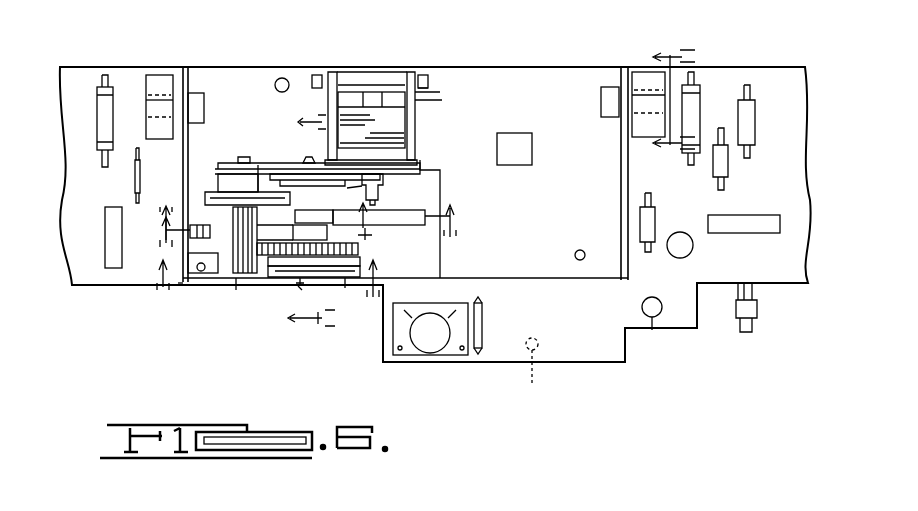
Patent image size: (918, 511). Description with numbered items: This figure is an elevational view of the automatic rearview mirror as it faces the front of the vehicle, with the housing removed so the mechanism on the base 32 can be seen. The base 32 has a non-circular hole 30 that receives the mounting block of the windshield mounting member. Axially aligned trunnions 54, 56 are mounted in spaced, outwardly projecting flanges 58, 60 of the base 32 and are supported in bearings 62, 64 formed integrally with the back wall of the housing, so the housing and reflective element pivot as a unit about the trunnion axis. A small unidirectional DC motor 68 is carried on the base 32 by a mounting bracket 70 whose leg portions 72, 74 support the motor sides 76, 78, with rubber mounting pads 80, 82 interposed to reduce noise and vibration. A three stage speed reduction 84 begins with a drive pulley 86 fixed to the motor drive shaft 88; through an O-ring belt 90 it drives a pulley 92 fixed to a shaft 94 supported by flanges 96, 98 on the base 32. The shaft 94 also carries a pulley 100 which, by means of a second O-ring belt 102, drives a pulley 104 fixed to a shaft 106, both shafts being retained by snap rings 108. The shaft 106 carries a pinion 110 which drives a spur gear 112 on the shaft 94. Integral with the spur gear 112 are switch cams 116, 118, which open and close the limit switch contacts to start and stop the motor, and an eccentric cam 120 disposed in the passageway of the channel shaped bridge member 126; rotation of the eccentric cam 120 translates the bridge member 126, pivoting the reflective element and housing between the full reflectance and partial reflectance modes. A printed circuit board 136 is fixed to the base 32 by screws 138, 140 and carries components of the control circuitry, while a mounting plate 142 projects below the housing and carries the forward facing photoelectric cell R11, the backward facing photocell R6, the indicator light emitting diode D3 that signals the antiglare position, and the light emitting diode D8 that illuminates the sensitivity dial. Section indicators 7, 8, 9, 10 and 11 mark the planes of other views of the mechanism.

The hole 30 is at (515, 135).
The base 32 is at (506, 66).
The trunnion 54 is at (150, 107).
The trunnion 56 is at (690, 105).
The flange 58 is at (190, 80).
The flange 60 is at (620, 77).
The bearing 62 is at (158, 80).
The bearing 64 is at (642, 72).
The unidirectional DC motor 68 is at (410, 70).
The mounting bracket 70 is at (428, 84).
The leg portion 72 is at (316, 75).
The leg portion 74 is at (420, 100).
The side of motor 76 is at (328, 100).
The side of motor 78 is at (415, 108).
The rubber mounting pad 80 is at (334, 70).
The rubber mounting pad 82 is at (424, 74).
The three stage speed reduction 84 is at (237, 152).
The drive pulley 86 is at (428, 170).
The drive shaft 88 is at (366, 203).
The O-ring belt 90 is at (247, 187).
The pulley 92 is at (270, 172).
The shaft 94 is at (309, 157).
The flange 96 is at (258, 165).
The flange 98 is at (340, 285).
The pulley 100 is at (353, 187).
The O-ring belt 102 is at (292, 221).
The pulley 104 is at (210, 165).
The shaft 106 is at (245, 297).
The snap ring 108 is at (236, 272).
The pinion 110 is at (180, 286).
The spur gear 112 is at (290, 255).
The switch cam 116 is at (268, 280).
The switch cam 118 is at (370, 235).
The eccentric cam 120 is at (360, 262).
The bridge member 126 is at (328, 369).
The printed circuit board 136 is at (777, 75).
The screw 138 is at (283, 78).
The screw 140 is at (580, 250).
The mounting plate 142 is at (588, 348).
The section line 7 is at (269, 275).
The section line 8 is at (185, 212).
The section line 9 is at (395, 212).
The section line 10 is at (302, 233).
The section line 11 is at (673, 98).
The photoelectric cell R11 is at (425, 362).
The photocell R6 is at (660, 316).
The light emitting diode D3 is at (525, 370).
The light emitting diode D8 is at (765, 331).